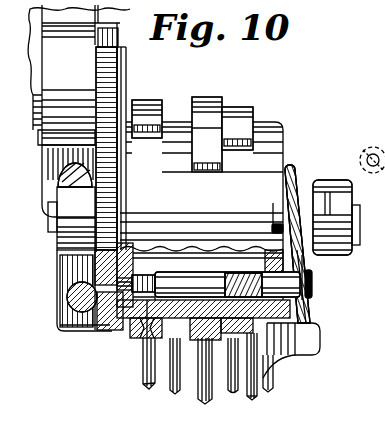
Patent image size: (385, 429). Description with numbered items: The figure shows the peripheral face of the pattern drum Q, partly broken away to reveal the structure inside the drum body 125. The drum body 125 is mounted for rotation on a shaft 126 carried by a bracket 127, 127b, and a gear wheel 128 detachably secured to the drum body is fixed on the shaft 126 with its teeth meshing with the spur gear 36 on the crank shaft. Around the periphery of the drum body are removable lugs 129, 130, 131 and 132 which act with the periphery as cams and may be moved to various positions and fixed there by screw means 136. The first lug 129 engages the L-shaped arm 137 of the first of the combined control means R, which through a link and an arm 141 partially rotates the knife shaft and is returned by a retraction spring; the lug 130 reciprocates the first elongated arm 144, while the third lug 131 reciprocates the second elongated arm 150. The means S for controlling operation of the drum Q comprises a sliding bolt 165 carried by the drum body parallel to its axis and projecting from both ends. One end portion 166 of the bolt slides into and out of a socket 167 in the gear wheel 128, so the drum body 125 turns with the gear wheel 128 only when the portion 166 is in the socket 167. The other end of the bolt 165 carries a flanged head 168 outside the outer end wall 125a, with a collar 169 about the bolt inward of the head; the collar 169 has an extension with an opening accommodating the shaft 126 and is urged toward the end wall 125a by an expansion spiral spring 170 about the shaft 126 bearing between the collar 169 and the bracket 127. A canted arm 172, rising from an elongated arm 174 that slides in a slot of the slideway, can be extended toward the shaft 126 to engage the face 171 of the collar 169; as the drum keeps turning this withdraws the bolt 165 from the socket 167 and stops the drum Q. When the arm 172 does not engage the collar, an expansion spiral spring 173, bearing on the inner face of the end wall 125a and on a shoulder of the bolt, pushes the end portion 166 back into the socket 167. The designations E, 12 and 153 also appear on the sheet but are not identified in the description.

The gear train section E is at (113, 34).
The spur gear 36 is at (119, 62).
The gear wheel 128 is at (118, 172).
The first lug 129 is at (160, 83).
The pattern drum Q is at (266, 112).
The arm 141 is at (375, 146).
The drum body 125 is at (286, 144).
The outer end wall 125a is at (283, 158).
The expansion spiral spring 170 is at (312, 188).
The bracket 127 is at (75, 273).
The bearing 127b is at (340, 196).
The frame 12 is at (355, 232).
The shaft 126 is at (265, 204).
The face of the collar 171 is at (268, 226).
The sliding bolt 165 is at (192, 276).
The control means S is at (172, 268).
The screw means 136 is at (158, 258).
The flanged head 168 is at (318, 288).
The expansion spiral spring 173 is at (312, 288).
The collar 169 is at (306, 312).
The canted arm 172 is at (322, 350).
The elongated arm 174 is at (274, 388).
The socket 167 is at (95, 335).
The end portion of the bolt 166 is at (120, 335).
The lug 130 is at (146, 356).
The L-shaped arm 137 is at (143, 384).
The combined control means R is at (161, 392).
The first elongated arm 144 is at (177, 395).
The second elongated arm 150 is at (206, 383).
The third lug 131 is at (232, 396).
The lug 132 is at (250, 355).
The blade 153 is at (253, 402).